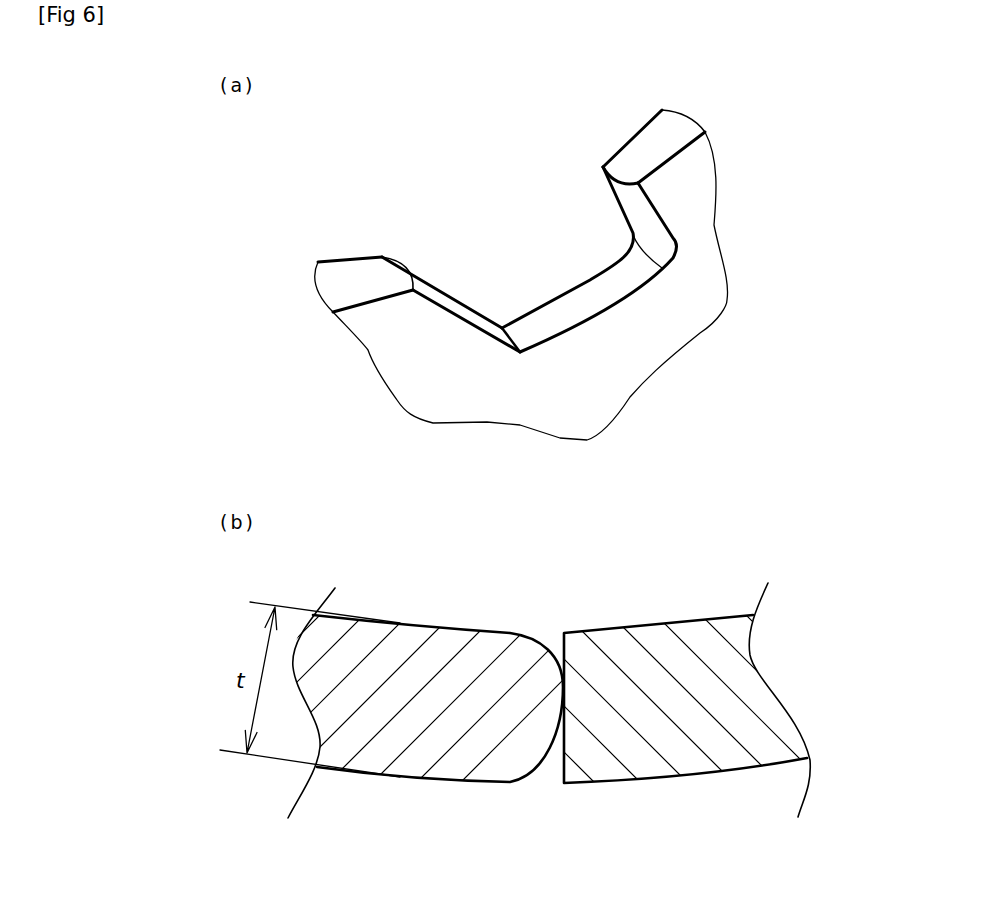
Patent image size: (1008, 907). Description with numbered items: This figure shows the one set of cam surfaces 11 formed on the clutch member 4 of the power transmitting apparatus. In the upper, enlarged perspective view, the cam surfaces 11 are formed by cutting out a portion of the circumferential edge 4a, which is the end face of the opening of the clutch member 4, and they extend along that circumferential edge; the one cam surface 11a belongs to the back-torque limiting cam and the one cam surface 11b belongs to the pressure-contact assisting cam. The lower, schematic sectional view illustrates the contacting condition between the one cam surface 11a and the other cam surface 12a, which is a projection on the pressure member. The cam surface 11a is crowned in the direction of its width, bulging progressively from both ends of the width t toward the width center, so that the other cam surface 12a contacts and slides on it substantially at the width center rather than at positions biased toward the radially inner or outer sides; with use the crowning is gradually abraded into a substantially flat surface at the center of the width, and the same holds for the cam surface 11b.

The clutch member 4 is at (390, 352).
The circumferential edge 4a is at (372, 272).
The one set of cam surfaces 11 is at (504, 453).
The one cam surface 11a is at (455, 307).
The one cam surface 11b is at (640, 212).
The other cam surface 12a is at (562, 647).